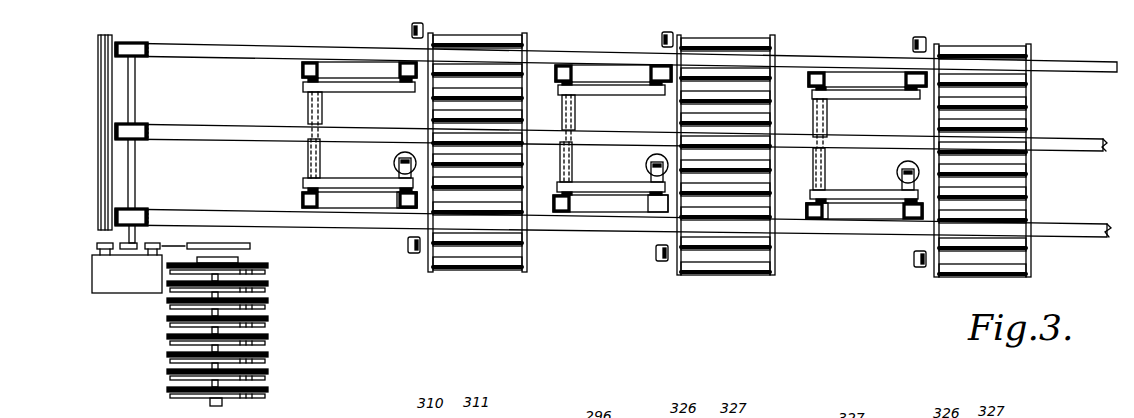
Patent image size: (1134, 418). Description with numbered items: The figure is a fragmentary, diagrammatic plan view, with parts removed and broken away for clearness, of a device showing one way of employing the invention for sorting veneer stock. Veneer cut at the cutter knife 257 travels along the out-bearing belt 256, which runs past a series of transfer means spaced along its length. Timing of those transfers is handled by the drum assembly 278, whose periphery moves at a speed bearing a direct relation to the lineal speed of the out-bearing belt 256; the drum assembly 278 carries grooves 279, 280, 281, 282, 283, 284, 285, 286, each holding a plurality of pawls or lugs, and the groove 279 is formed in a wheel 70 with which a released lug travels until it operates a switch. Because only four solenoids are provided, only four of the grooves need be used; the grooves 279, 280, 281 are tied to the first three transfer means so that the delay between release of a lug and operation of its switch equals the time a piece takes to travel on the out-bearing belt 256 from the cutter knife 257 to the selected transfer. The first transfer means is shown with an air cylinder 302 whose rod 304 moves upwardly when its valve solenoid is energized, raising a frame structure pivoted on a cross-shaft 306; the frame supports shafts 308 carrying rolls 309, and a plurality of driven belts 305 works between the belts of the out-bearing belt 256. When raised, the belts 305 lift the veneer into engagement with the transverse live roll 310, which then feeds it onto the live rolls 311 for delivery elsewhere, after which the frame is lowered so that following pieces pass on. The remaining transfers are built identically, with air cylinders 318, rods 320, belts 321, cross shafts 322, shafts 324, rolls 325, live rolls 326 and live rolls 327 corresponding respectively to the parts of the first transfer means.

The wheel 70 is at (172, 273).
The out-bearing belt 256 is at (195, 57).
The cutter knife 257 is at (97, 168).
The drum assembly 278 is at (157, 322).
The groove 279 is at (270, 392).
The groove 280 is at (270, 374).
The groove 281 is at (270, 357).
The groove 282 is at (270, 339).
The groove 283 is at (270, 321).
The groove 284 is at (270, 303).
The groove 285 is at (270, 286).
The groove 286 is at (270, 268).
The air cylinder 302 is at (397, 158).
The rod 304 is at (398, 168).
The driven belts 305 is at (360, 62).
The cross-shaft 306 is at (305, 95).
The shafts 308 is at (405, 92).
The rolls 309 is at (405, 208).
The transverse live roll 310 is at (424, 30).
The live rolls 311 is at (464, 66).
The air cylinders 318 is at (648, 160).
The rods 320 is at (650, 172).
The belts 321 is at (598, 210).
The cross shafts 322 is at (561, 97).
The shafts 324 is at (665, 95).
The rolls 325 is at (658, 212).
The live rolls 326 is at (661, 38).
The live rolls 327 is at (723, 70).